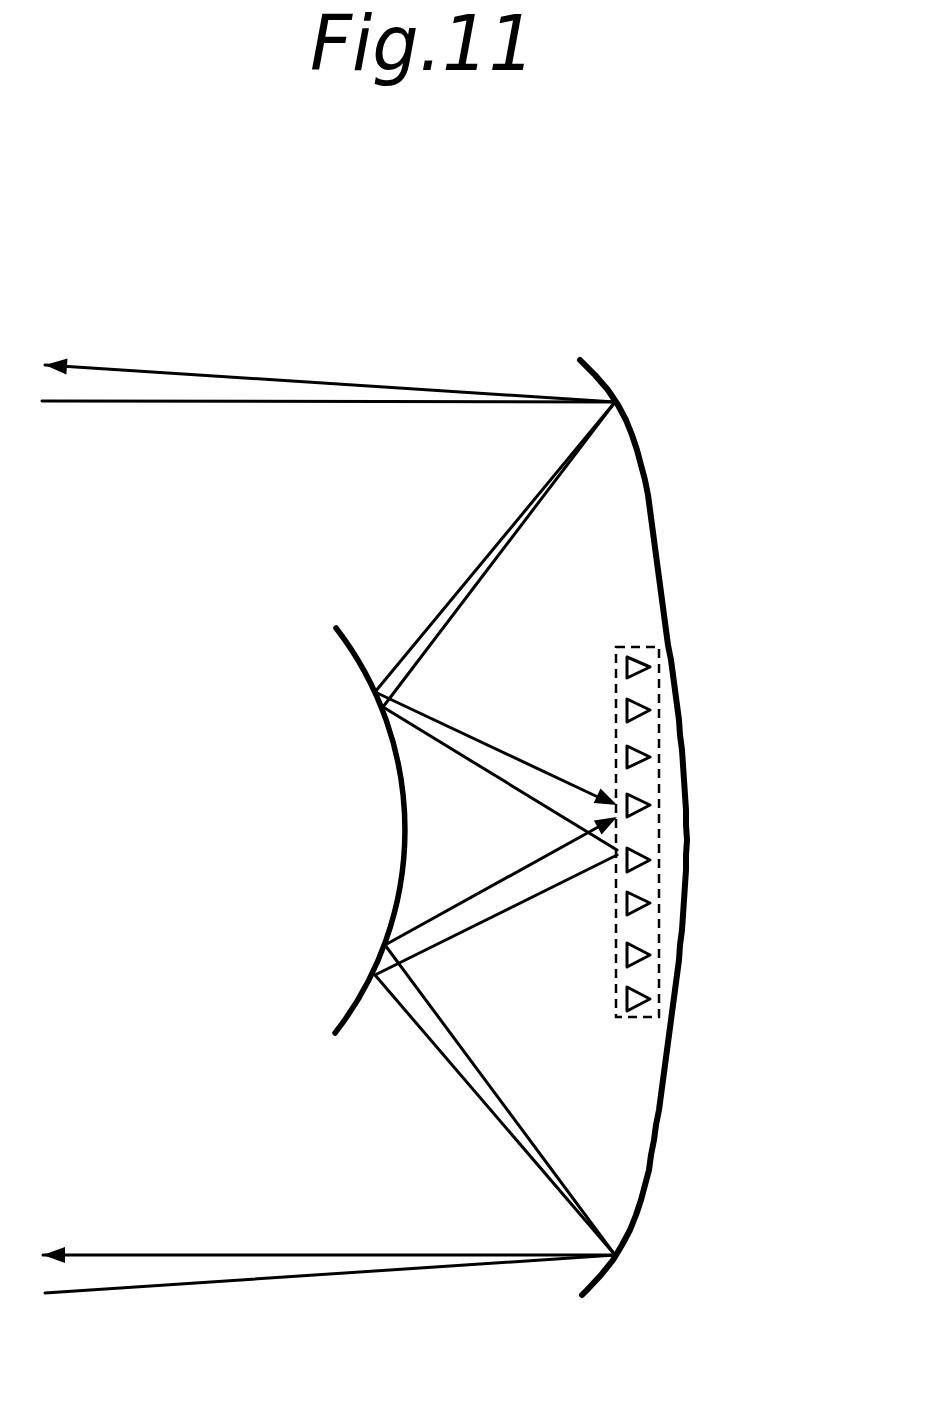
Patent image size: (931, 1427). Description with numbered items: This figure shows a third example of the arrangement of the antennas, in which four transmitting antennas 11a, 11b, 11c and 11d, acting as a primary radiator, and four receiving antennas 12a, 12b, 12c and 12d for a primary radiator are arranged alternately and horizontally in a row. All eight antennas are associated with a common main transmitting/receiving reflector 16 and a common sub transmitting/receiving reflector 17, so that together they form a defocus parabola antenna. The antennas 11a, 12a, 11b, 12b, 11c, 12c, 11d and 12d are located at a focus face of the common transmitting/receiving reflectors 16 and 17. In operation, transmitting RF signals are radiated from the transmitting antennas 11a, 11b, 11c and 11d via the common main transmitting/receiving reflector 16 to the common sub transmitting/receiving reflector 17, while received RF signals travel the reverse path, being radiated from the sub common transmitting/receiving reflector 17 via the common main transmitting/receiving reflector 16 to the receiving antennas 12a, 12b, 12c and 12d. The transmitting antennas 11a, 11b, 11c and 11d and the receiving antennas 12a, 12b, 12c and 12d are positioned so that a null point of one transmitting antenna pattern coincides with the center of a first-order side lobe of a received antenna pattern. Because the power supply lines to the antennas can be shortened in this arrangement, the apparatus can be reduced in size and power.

The transmitting antenna 11a is at (648, 661).
The transmitting antenna 11b is at (648, 751).
The transmitting antenna 11c is at (648, 866).
The transmitting antenna 11d is at (648, 961).
The receiving antenna 12a is at (648, 704).
The receiving antenna 12b is at (648, 799).
The receiving antenna 12c is at (648, 909).
The receiving antenna 12d is at (648, 1005).
The common main transmitting/receiving reflector 16 is at (351, 645).
The common sub transmitting/receiving reflector 17 is at (632, 433).